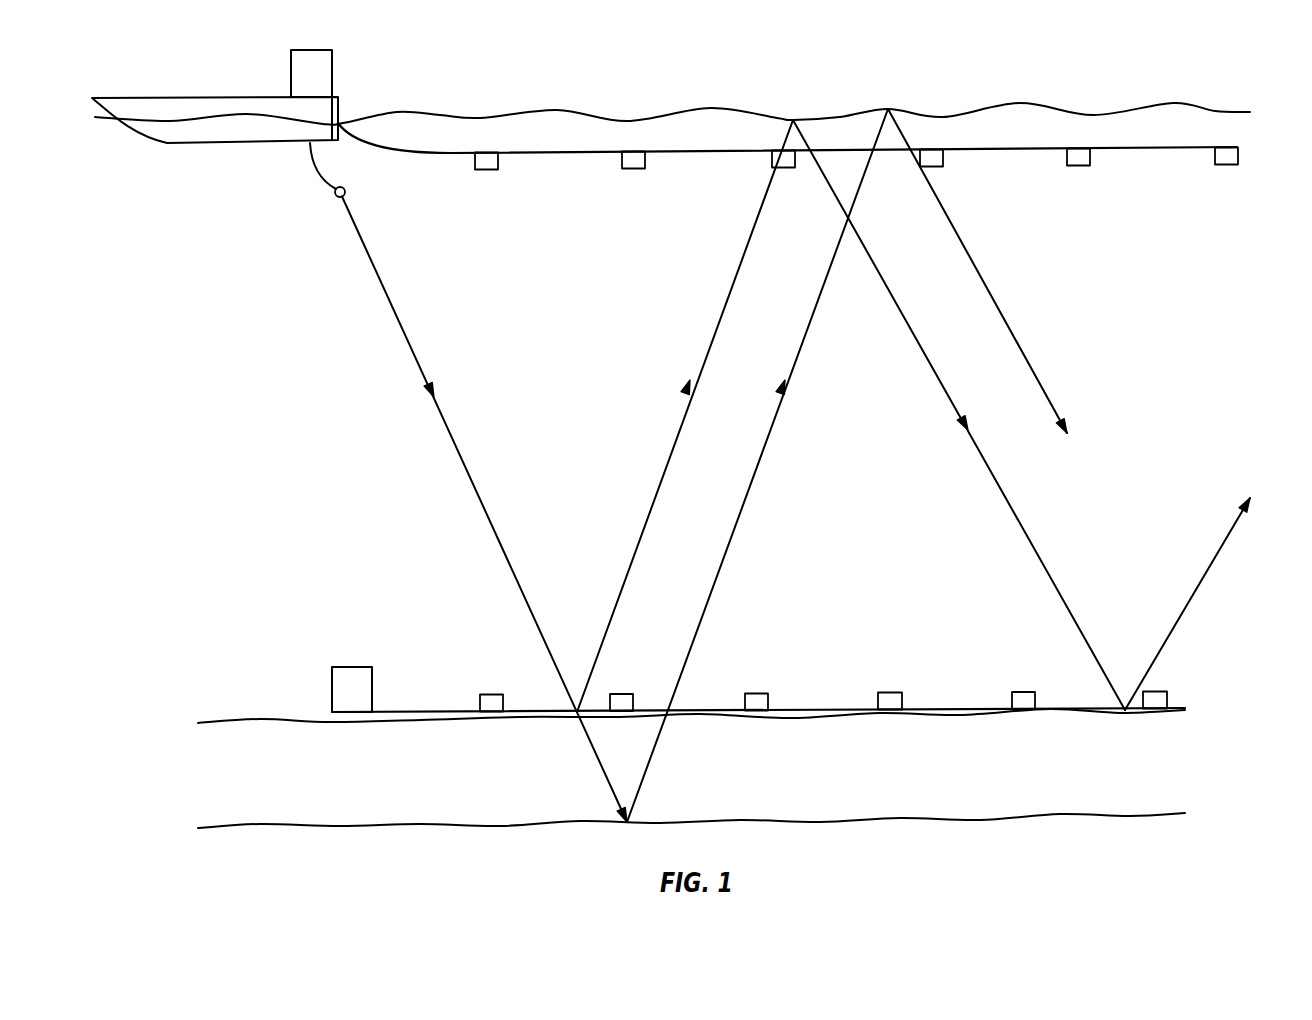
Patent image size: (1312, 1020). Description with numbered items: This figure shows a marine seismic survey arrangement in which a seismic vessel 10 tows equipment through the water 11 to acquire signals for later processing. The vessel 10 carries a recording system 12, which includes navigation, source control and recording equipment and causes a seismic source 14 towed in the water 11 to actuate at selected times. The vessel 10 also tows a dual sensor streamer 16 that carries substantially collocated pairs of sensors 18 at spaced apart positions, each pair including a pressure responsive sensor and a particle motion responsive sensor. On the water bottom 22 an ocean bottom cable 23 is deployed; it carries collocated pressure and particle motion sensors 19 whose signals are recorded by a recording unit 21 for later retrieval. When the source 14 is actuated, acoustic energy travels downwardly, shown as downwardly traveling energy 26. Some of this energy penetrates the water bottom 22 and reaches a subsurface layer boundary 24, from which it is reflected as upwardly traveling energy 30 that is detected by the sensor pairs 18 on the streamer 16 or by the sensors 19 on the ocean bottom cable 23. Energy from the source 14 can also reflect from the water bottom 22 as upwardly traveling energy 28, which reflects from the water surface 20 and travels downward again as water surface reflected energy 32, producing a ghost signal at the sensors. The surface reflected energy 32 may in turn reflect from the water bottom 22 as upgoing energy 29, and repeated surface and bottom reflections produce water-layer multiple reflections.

The seismic vessel 10 is at (165, 98).
The water 11 is at (1181, 506).
The recording system 12 is at (310, 50).
The seismic source 14 is at (330, 193).
The streamer 16 is at (1130, 147).
The sensor pairs 18 is at (485, 170).
The sensors 19 is at (492, 694).
The water surface 20 is at (405, 113).
The recording unit 21 is at (352, 667).
The water bottom 22 is at (255, 722).
The ocean bottom cable 23 is at (400, 712).
The subsurface layer boundary 24 is at (258, 826).
The downwardly traveling energy 26 is at (448, 435).
The upwardly traveling energy reflected from the water bottom 28 is at (712, 335).
The upwardly traveling energy 29 is at (1193, 595).
The upwardly traveling acoustic energy 30 is at (762, 488).
The water surface reflected energy 32 is at (942, 385).